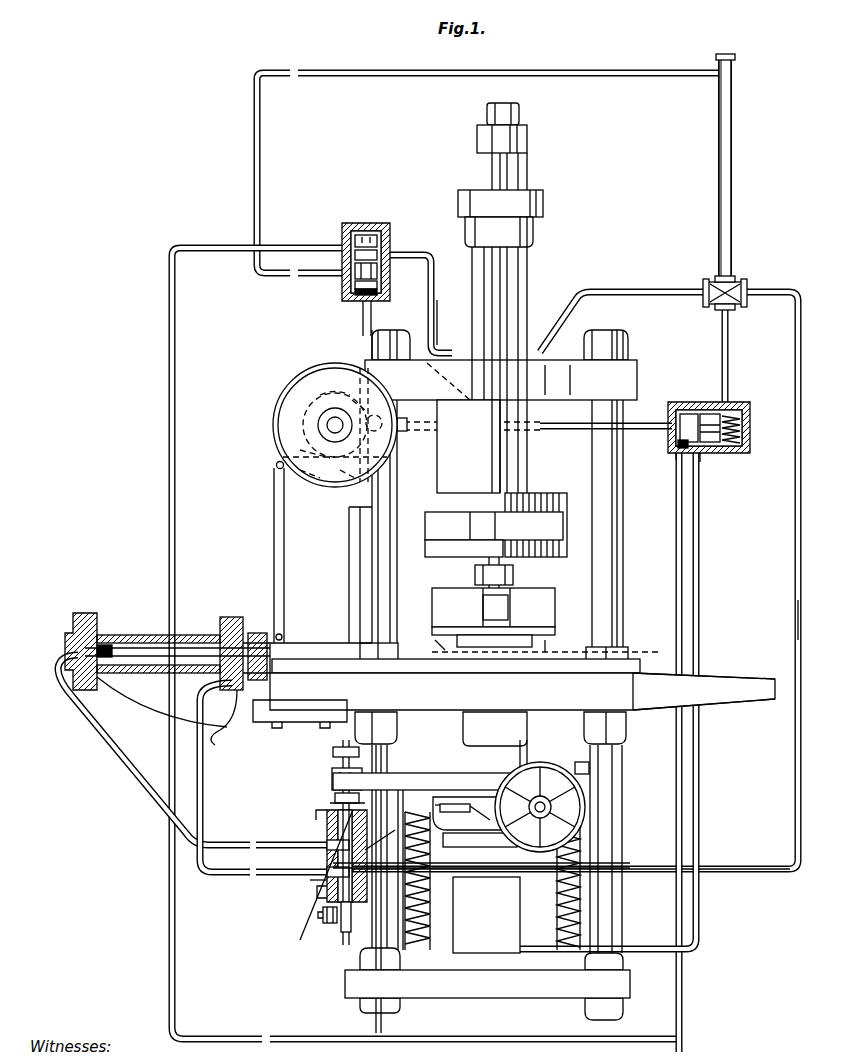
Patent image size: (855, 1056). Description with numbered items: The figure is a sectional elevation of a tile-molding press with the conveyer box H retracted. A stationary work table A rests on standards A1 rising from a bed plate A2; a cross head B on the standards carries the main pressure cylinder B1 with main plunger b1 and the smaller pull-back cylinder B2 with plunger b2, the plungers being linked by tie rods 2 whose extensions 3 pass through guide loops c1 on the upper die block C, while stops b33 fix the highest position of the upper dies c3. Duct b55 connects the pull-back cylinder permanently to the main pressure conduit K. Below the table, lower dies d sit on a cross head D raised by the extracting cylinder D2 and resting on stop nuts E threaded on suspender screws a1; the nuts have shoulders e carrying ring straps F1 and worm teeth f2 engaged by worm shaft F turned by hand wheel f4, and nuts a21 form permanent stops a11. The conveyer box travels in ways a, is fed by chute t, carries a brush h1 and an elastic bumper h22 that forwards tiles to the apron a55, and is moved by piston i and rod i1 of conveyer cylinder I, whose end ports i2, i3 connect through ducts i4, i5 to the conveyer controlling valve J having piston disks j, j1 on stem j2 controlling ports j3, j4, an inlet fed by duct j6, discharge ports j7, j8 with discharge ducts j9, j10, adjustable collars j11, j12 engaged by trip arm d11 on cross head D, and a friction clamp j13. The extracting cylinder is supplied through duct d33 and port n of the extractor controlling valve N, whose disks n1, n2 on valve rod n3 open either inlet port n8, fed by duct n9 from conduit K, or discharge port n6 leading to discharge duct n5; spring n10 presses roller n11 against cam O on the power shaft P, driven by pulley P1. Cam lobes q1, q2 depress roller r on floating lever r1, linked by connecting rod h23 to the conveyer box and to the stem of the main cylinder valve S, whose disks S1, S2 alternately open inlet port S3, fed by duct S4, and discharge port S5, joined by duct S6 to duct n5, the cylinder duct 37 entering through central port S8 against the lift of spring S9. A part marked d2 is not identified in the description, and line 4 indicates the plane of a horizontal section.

The main pressure cylinder valve S is at (366, 276).
The piston disk S1 is at (403, 290).
The piston disk S2 is at (370, 240).
The inlet port S3 is at (348, 286).
The duct S4 is at (489, 186).
The discharge port S5 is at (350, 255).
The duct S6 is at (333, 246).
The central port S8 is at (395, 256).
The spring S9 is at (362, 300).
The duct 37 is at (448, 313).
The plunger b2 is at (506, 138).
The tie rods 2 is at (492, 303).
The pull back cylinder B2 is at (520, 282).
The cross head B is at (501, 380).
The main pressure cylinder B1 is at (482, 446).
The main plunger b1 is at (536, 537).
The stops b33 is at (475, 573).
The duct b55 is at (566, 566).
The upper die block C is at (500, 573).
The guide loops c1 is at (483, 605).
The upper dies c3 is at (535, 646).
The extensions 3 is at (546, 655).
The elastic bumper h22 is at (486, 647).
The swab or brush h1 is at (429, 637).
The connecting rod h23 is at (266, 555).
The chute t is at (360, 575).
The section line 4 is at (648, 644).
The work table A is at (522, 691).
The standards A1 is at (415, 505).
The bed plate A2 is at (487, 984).
The ways a is at (456, 661).
The suspender screws a1 is at (480, 844).
The permanent stops a11 is at (463, 740).
The nuts a21 is at (479, 719).
The table extension or apron a55 is at (704, 685).
The conveyer box H is at (320, 638).
The conveyer cylinder I is at (177, 641).
The piston i is at (110, 650).
The rod i1 is at (226, 617).
The end port i2 is at (68, 652).
The end port i3 is at (222, 716).
The duct i4 is at (194, 750).
The duct i5 is at (265, 777).
The power shaft P is at (327, 425).
The pulley P1 is at (334, 425).
The cam O is at (333, 390).
The cam lobe q2 is at (350, 395).
The cam lobe q1 is at (325, 445).
The roller n11 is at (376, 410).
The roller r is at (343, 480).
The floating lever r1 is at (310, 480).
The main fluid pressure supply conduit K is at (736, 232).
The extractor controlling valve N is at (710, 437).
The port n is at (703, 455).
The piston disk n1 is at (676, 446).
The piston disk n2 is at (700, 412).
The valve rod n3 is at (534, 416).
The discharge duct n5 is at (681, 752).
The discharge port n6 is at (680, 455).
The inlet port n8 is at (718, 412).
The duct n9 is at (727, 339).
The spring n10 is at (750, 428).
The conveyer controlling valve J is at (338, 852).
The piston disk j is at (327, 852).
The piston disk j1 is at (327, 890).
The valve stem j2 is at (340, 803).
The port j3 is at (322, 836).
The port j4 is at (327, 878).
The duct j6 is at (650, 872).
The discharge port j7 is at (408, 861).
The discharge port j8 is at (323, 916).
The discharge duct j9 is at (385, 826).
The discharge duct j10 is at (392, 1026).
The adjustable collar j11 is at (333, 752).
The adjustable collar j12 is at (333, 798).
The friction clamp j13 is at (343, 925).
The cross head D is at (423, 782).
The extracting cylinder D2 is at (486, 915).
The lower dies d is at (472, 844).
The spring d2 is at (558, 873).
The trip arm d11 is at (325, 781).
The duct d33 is at (615, 703).
The supporting stops E is at (470, 816).
The shoulders e is at (468, 808).
The worm shaft F is at (432, 807).
The ring straps F1 is at (625, 800).
The worm gear teeth f2 is at (505, 781).
The hand wheel f4 is at (545, 768).